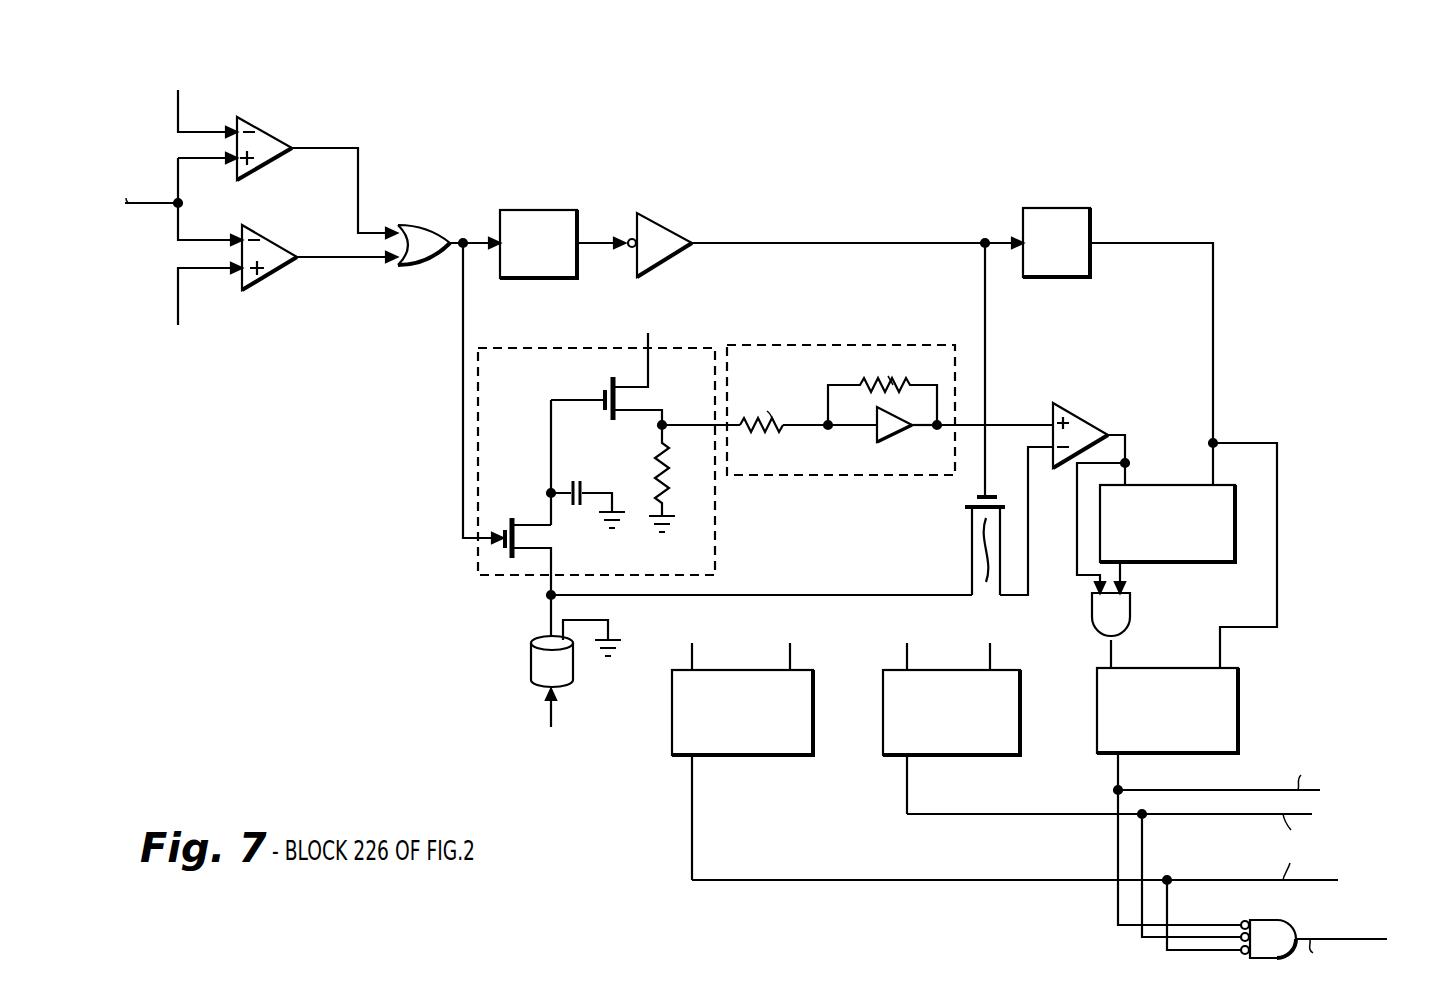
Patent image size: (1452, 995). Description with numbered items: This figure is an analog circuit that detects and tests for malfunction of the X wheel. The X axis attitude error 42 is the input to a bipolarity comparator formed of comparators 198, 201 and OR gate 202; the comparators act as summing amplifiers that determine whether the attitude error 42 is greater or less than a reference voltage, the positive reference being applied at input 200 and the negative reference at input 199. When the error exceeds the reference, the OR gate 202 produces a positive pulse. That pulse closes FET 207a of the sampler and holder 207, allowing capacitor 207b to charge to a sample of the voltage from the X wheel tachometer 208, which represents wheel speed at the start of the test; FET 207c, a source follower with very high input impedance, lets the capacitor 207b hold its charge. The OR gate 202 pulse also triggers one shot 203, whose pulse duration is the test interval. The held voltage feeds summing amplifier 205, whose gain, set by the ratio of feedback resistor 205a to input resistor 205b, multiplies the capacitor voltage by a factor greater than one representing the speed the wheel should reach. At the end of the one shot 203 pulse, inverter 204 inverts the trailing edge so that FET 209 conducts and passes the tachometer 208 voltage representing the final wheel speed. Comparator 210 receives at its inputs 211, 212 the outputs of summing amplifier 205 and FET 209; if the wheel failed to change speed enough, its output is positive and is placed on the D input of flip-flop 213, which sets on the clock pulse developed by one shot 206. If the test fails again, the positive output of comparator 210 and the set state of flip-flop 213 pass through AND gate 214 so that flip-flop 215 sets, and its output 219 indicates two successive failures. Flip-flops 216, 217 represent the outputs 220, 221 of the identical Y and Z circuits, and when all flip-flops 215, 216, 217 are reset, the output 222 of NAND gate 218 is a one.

The X axis attitude error 42 is at (148, 202).
The comparator 198 is at (272, 276).
The negative reference voltage input 199 is at (178, 299).
The positive reference voltage input 200 is at (197, 131).
The comparator 201 is at (266, 134).
The OR gate 202 is at (397, 345).
The one shot 203 is at (565, 210).
The inverter 204 is at (825, 234).
The summing amplifier 205 is at (795, 348).
The feedback resistor Rf 205a is at (856, 385).
The input resistor R 205b is at (756, 432).
The one shot 206 is at (1092, 216).
The sampler and holder 207 is at (515, 348).
The FET 207a is at (524, 540).
The capacitor 207b is at (581, 483).
The FET 207c is at (629, 381).
The X wheel tachometer 208 is at (531, 668).
The FET 209 is at (779, 435).
The comparator 210 is at (1074, 416).
The input to comparator 211 is at (1019, 425).
The input to comparator 212 is at (1029, 560).
The flip-flop 213 is at (1203, 562).
The AND gate 214 is at (1092, 617).
The flip-flop 215 is at (1240, 722).
The flip-flop 216 is at (1022, 724).
The flip-flop 217 is at (815, 724).
The NAND gate 218 is at (1275, 920).
The output of flip-flop 215 219 is at (1243, 790).
The output of Y detection and testing circuit 220 is at (1245, 814).
The output of Z detection and testing circuit 221 is at (1245, 880).
The output of NAND gate 222 is at (1345, 939).